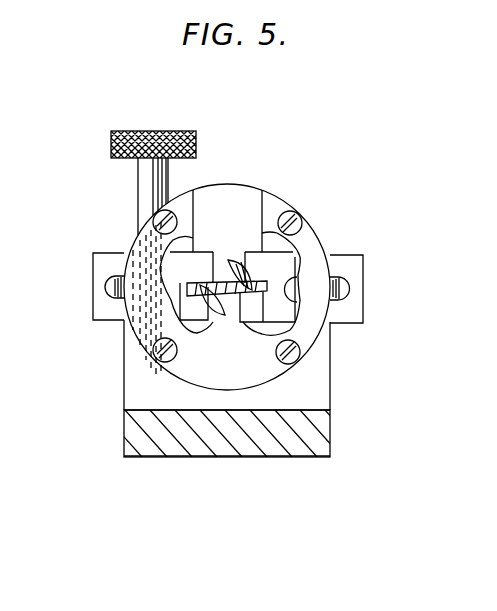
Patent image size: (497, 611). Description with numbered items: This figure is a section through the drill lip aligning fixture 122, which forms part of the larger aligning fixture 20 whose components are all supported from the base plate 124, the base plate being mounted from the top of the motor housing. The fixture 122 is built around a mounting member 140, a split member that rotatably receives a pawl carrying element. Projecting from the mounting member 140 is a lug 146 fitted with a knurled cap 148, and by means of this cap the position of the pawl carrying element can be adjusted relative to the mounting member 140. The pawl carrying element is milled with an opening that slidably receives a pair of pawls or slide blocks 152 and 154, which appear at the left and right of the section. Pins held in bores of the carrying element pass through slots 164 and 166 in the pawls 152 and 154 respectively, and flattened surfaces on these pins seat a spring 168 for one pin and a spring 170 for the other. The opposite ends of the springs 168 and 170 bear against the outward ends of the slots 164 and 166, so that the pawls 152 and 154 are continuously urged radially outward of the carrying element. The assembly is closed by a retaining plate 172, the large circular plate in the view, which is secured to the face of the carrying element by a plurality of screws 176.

The aligning fixture 20 is at (335, 188).
The drill lip aligning fixture 122 is at (118, 385).
The base plate 124 is at (217, 443).
The mounting member 140 is at (127, 357).
The lug 146 is at (135, 175).
The knurled cap 148 is at (140, 131).
The pawl 152 is at (353, 317).
The pawl 154 is at (102, 260).
The slot 164 is at (348, 292).
The slot 166 is at (108, 297).
The spring 168 is at (340, 283).
The spring 170 is at (108, 282).
The retaining plate 172 is at (305, 257).
The screws 176 is at (292, 210).